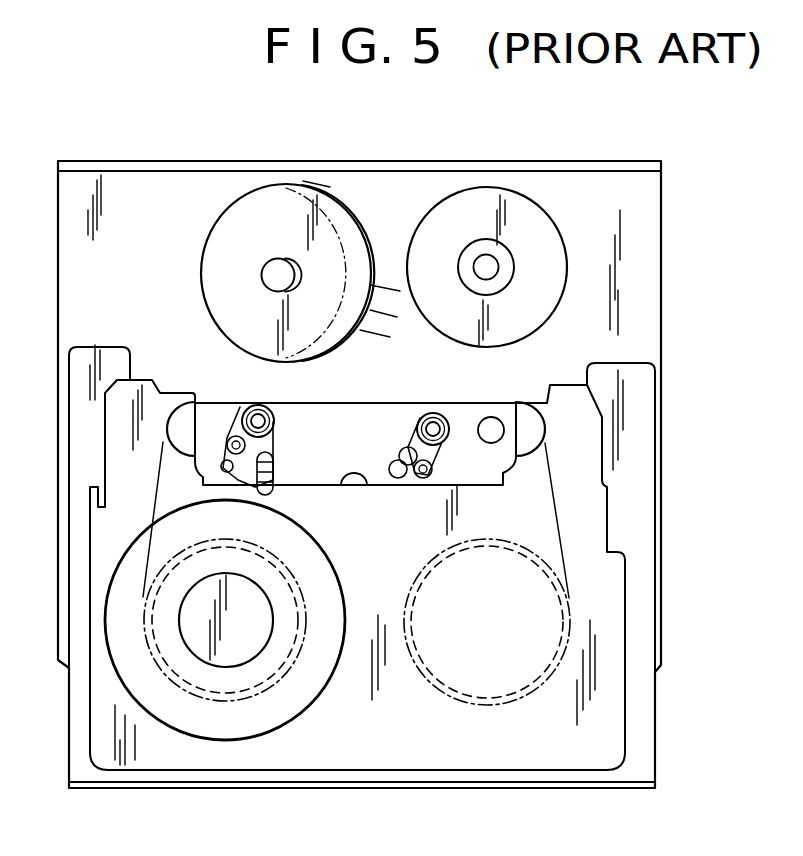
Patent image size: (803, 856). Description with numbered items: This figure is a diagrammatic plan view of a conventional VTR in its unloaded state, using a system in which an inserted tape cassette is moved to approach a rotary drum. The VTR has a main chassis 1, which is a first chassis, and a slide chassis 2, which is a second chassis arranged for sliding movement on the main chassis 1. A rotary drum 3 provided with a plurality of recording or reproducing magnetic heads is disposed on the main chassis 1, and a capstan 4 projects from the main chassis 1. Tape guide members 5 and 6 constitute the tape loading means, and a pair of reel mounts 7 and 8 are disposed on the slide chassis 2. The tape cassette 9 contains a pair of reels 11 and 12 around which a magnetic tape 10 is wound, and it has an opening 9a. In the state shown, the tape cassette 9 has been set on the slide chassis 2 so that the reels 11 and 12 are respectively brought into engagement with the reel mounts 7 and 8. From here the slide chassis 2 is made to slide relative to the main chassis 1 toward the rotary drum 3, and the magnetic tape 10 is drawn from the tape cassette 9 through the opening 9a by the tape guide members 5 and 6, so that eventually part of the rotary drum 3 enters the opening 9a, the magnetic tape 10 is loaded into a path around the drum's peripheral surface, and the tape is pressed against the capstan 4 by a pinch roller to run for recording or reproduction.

The main chassis 1 is at (592, 210).
The slide chassis 2 is at (77, 720).
The rotary drum 3 is at (244, 212).
The capstan 4 is at (482, 260).
The tape guide member 5 is at (240, 407).
The tape guide member 6 is at (447, 420).
The reel mount 7 is at (190, 690).
The reel mount 8 is at (451, 690).
The tape cassette 9 is at (327, 750).
The opening 9a is at (361, 478).
The magnetic tape 10 is at (403, 402).
The reel 11 is at (222, 700).
The reel 12 is at (520, 698).